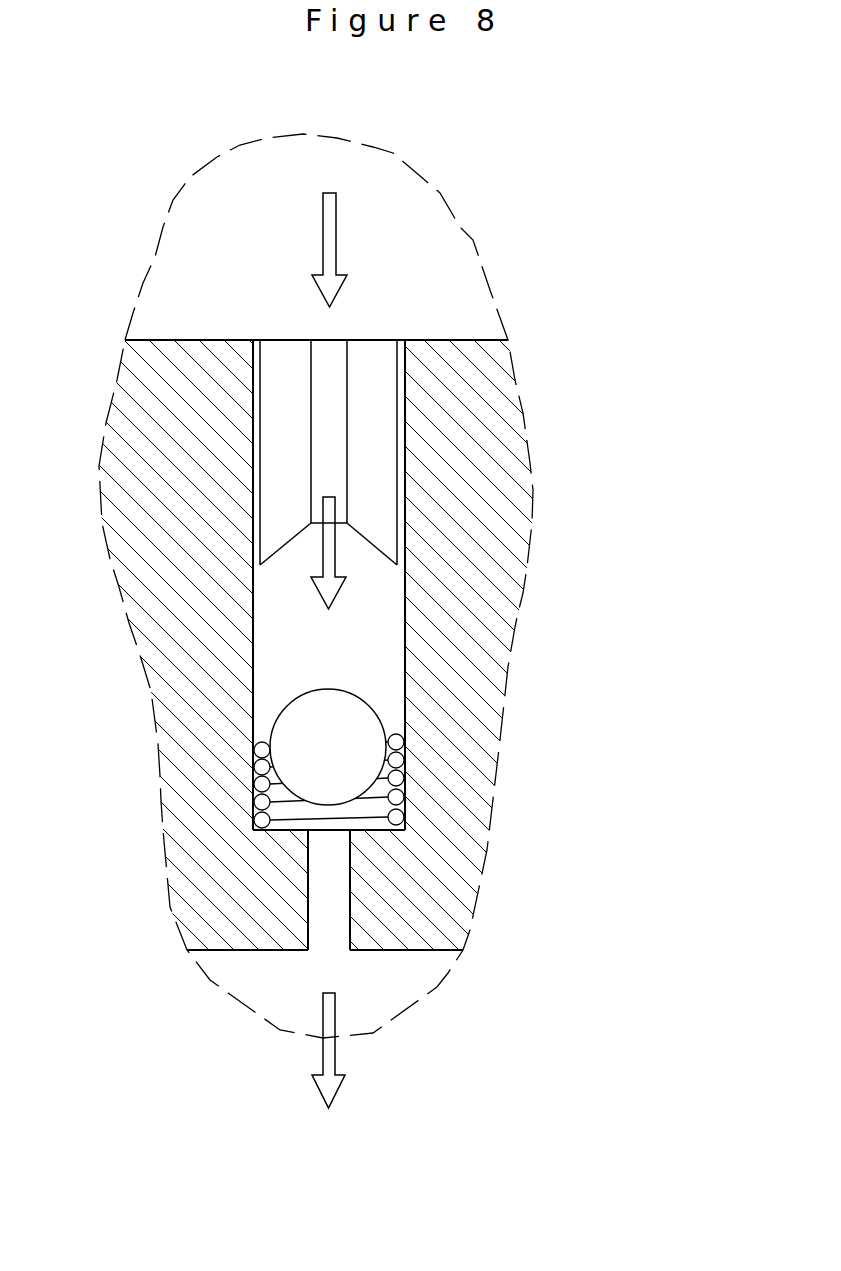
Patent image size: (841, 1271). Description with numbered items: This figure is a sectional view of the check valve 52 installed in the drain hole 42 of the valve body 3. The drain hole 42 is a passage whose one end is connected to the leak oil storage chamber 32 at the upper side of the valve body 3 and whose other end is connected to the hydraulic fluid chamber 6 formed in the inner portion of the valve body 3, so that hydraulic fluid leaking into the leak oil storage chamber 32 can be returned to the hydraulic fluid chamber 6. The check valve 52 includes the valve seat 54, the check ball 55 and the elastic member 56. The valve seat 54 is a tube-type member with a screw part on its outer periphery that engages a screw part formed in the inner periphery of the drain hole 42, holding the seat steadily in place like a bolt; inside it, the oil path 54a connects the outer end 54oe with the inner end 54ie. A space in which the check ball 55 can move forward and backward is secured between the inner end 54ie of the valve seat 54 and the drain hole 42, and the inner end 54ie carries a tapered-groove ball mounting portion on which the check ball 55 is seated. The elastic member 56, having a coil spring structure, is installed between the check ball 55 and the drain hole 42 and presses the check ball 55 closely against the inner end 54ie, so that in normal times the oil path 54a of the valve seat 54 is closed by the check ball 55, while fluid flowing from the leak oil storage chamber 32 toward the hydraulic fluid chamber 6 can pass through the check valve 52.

The valve body 3 is at (134, 497).
The hydraulic fluid chamber 6 is at (400, 980).
The leak oil storage chamber 32 is at (453, 255).
The drain hole 42 is at (405, 657).
The check valve 52 is at (414, 587).
The valve seat 54 is at (444, 545).
The oil path 54a is at (347, 403).
The outer end 54oe is at (375, 340).
The inner end 54ie is at (373, 547).
The check ball 55 is at (280, 720).
The elastic member 56 is at (415, 822).